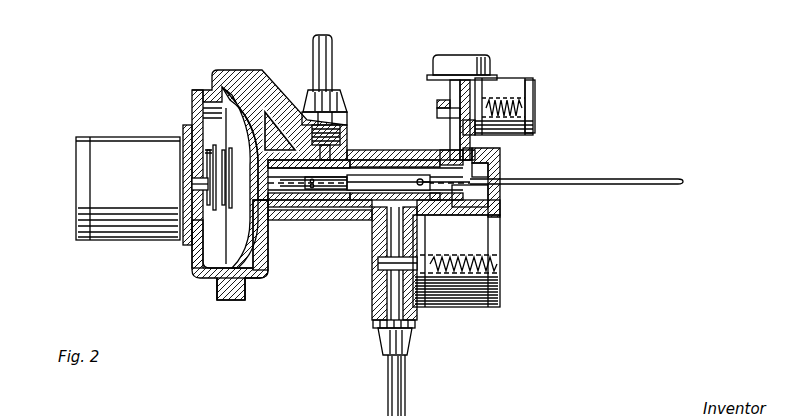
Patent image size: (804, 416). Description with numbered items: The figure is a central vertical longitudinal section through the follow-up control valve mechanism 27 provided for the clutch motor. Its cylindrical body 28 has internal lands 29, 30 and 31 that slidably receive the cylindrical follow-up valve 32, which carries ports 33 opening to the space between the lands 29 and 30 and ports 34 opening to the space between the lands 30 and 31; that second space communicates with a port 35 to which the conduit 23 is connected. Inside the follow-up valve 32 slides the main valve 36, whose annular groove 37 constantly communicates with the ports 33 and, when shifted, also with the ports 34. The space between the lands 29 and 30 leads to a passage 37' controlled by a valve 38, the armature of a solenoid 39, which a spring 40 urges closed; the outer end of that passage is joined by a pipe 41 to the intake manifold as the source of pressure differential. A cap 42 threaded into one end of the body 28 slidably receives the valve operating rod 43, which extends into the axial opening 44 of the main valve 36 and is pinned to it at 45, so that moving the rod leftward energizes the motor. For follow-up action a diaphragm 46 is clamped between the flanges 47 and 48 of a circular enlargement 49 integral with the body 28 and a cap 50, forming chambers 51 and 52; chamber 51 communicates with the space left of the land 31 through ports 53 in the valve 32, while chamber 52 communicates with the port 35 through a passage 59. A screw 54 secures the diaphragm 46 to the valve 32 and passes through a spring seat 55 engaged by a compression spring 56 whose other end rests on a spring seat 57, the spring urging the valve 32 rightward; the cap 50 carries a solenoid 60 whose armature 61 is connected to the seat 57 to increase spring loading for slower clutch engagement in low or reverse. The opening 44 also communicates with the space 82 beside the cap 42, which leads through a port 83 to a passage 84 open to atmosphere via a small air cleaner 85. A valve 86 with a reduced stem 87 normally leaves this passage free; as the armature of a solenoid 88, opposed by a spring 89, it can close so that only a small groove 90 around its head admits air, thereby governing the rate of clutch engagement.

The conduit 23 is at (332, 68).
The follow-up control valve mechanism 27 is at (357, 142).
The cylindrical body 28 is at (312, 223).
The internal land 29 is at (423, 160).
The internal land 30 is at (382, 245).
The internal land 31 is at (303, 222).
The cylindrical valve 32 is at (375, 167).
The ports 33 is at (408, 175).
The ports 34 is at (338, 207).
The port 35 is at (350, 118).
The main valve 36 is at (503, 160).
The annular groove 37 is at (451, 216).
The passage 37' is at (372, 269).
The valve 38 is at (372, 272).
The solenoid 39 is at (478, 240).
The spring 40 is at (500, 262).
The pipe 41 is at (388, 382).
The cap 42 is at (502, 170).
The valve operating rod 43 is at (602, 179).
The axial opening 44 is at (357, 207).
The pin 45 is at (421, 186).
The diaphragm 46 is at (229, 304).
The flange 47 is at (242, 301).
The flange 48 is at (220, 301).
The circular enlargement 49 is at (258, 278).
The cap 50 is at (193, 272).
The chamber 51 is at (260, 258).
The chamber 52 is at (217, 248).
The ports 53 is at (290, 207).
The screw 54 is at (218, 158).
The spring seat 55 is at (280, 131).
The compression spring 56 is at (220, 214).
The spring seat 57 is at (207, 157).
The passage 59 is at (242, 80).
The solenoid 60 is at (124, 137).
The armature 61 is at (200, 185).
The space 82 is at (493, 196).
The port 83 is at (483, 150).
The passage 84 is at (453, 92).
The air cleaner 85 is at (483, 53).
The valve 86 is at (447, 102).
The reduced stem 87 is at (462, 128).
The solenoid 88 is at (502, 87).
The spring 89 is at (536, 84).
The groove 90 is at (440, 112).